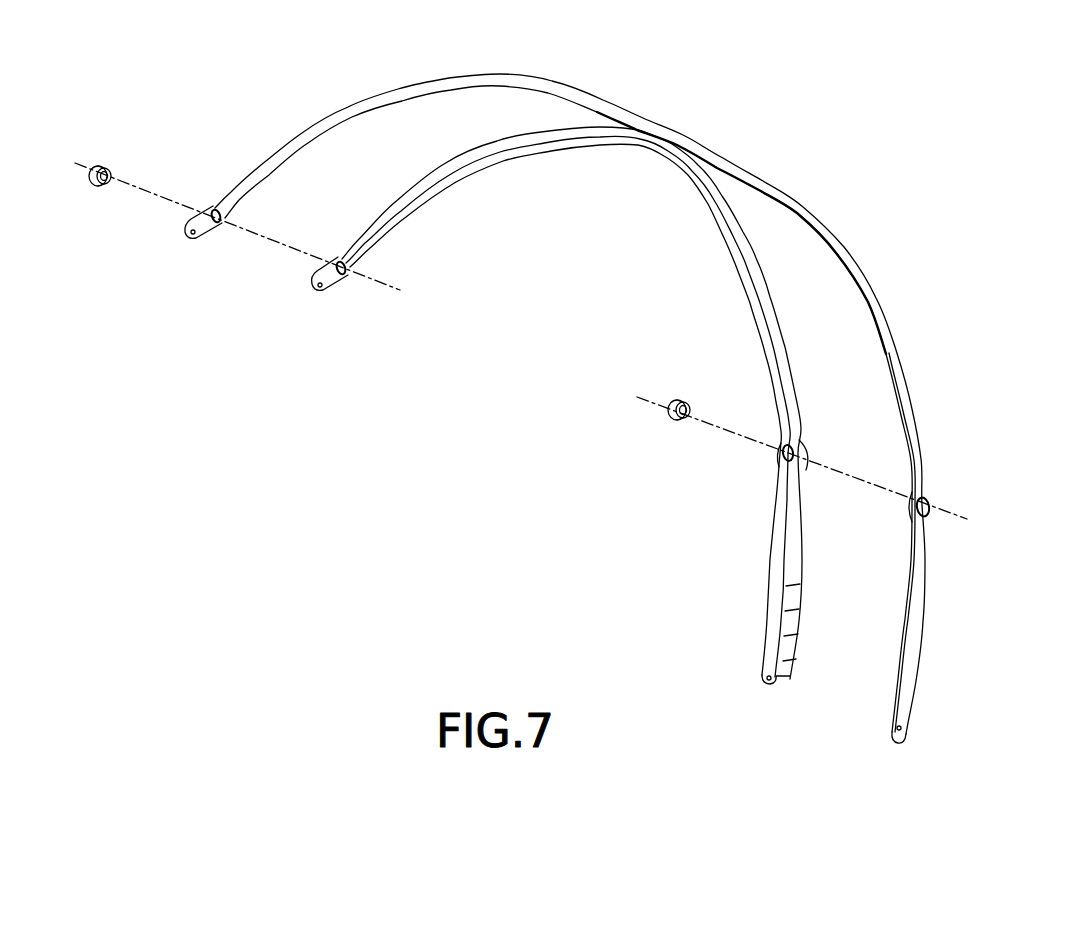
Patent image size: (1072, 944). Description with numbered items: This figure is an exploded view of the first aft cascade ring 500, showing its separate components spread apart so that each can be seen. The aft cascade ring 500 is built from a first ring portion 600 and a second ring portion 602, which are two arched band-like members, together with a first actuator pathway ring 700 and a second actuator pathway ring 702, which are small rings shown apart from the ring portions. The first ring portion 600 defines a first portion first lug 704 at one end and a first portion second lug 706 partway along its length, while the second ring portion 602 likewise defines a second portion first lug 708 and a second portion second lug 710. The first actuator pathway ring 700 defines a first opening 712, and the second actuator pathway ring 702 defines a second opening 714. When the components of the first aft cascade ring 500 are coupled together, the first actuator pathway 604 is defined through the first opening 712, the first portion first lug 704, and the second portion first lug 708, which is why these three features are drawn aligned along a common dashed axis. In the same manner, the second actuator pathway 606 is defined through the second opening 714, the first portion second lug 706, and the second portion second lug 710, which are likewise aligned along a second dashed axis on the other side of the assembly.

The first aft cascade ring 500 is at (932, 254).
The first ring portion 600 is at (366, 101).
The second ring portion 602 is at (543, 155).
The first actuator pathway 604 is at (145, 193).
The second actuator pathway 606 is at (958, 519).
The first actuator pathway ring 700 is at (92, 180).
The second actuator pathway ring 702 is at (685, 423).
The first portion first lug 704 is at (218, 225).
The first portion second lug 706 is at (791, 461).
The second portion first lug 708 is at (344, 277).
The second portion second lug 710 is at (927, 515).
The first opening 712 is at (111, 174).
The second opening 714 is at (692, 405).